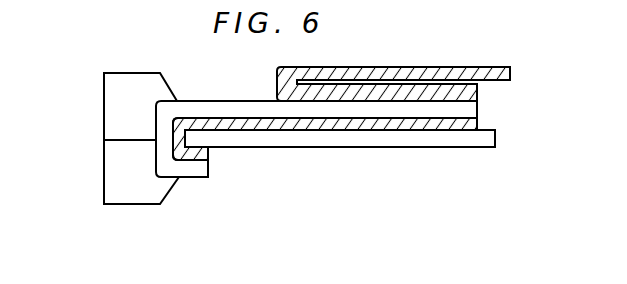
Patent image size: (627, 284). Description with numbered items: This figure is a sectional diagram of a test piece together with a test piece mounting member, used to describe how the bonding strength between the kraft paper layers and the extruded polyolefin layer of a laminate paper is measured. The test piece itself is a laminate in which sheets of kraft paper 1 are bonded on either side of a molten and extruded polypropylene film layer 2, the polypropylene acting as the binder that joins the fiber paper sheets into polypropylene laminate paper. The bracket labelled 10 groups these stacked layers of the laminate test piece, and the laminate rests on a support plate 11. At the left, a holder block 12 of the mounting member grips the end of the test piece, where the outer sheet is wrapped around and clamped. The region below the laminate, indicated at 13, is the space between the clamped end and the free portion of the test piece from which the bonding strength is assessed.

The sheets of kraft paper 1 is at (512, 74).
The molten and extruded polypropylene film layer 2 is at (478, 113).
The laminated body 10 is at (568, 73).
The support plate 11 is at (490, 147).
The holder block 12 is at (110, 172).
The gap 13 is at (282, 185).